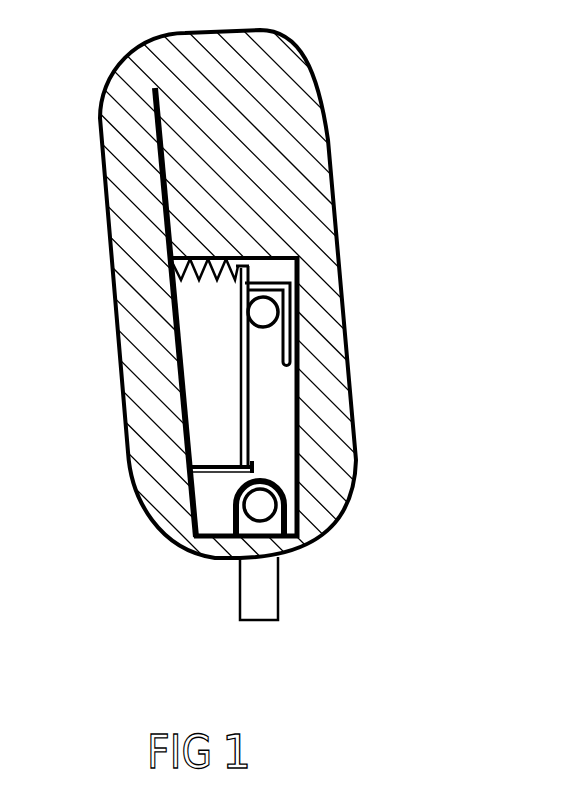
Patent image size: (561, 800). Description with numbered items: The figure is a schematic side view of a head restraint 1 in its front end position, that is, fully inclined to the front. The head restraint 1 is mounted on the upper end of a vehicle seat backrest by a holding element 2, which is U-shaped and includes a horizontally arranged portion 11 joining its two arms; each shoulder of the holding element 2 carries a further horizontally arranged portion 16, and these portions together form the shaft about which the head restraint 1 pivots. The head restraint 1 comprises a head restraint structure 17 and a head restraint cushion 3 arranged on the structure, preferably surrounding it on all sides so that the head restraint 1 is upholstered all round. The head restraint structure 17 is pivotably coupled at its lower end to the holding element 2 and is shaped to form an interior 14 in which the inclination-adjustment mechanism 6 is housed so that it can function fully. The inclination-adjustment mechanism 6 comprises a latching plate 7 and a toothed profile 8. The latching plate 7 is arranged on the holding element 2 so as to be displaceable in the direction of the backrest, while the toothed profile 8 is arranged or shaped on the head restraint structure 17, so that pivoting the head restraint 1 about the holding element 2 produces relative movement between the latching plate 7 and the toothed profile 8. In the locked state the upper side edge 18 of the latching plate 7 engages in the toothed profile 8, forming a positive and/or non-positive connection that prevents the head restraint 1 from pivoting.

The head restraint 1 is at (277, 52).
The holding element 2 is at (268, 590).
The head restraint cushion 3 is at (117, 150).
The inclination-adjustment mechanism 6 is at (302, 379).
The latching plate 7 is at (246, 281).
The toothed profile 8 is at (170, 268).
The horizontally arranged portion 11 is at (268, 312).
The interior 14 is at (287, 437).
The further horizontally arranged portion 16 is at (268, 506).
The head restraint structure 17 is at (158, 197).
The upper side edge 18 is at (244, 270).